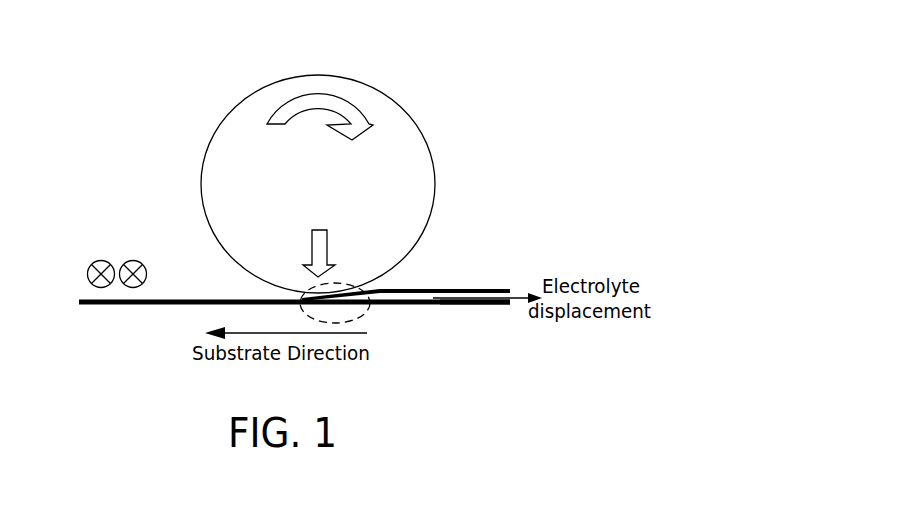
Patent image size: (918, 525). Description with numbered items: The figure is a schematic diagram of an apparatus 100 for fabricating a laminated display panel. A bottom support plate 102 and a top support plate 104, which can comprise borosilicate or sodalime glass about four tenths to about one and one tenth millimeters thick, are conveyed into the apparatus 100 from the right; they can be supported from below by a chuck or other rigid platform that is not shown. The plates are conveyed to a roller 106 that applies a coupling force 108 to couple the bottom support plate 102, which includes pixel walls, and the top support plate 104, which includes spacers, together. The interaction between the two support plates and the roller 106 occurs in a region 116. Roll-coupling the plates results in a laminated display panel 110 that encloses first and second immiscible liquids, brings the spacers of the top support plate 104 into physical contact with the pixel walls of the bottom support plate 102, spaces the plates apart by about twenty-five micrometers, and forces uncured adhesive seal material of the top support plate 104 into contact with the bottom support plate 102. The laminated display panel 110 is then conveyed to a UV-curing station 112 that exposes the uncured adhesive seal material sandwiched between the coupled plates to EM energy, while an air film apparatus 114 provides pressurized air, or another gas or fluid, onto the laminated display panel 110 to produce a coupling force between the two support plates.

The apparatus 100 is at (539, 43).
The bottom support plate 102 is at (478, 306).
The top support plate 104 is at (470, 290).
The roller 106 is at (370, 83).
The coupling force 108 is at (314, 228).
The laminated display panel 110 is at (146, 305).
The UV-curing station 112 is at (137, 260).
The air film apparatus 114 is at (87, 270).
The region 116 is at (368, 313).